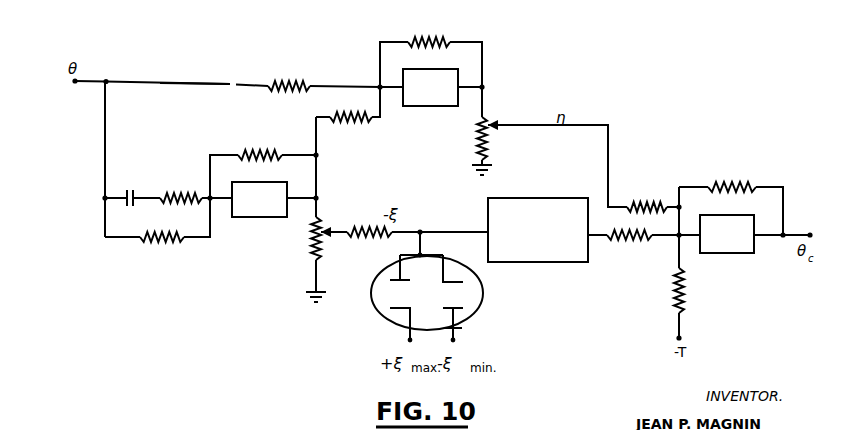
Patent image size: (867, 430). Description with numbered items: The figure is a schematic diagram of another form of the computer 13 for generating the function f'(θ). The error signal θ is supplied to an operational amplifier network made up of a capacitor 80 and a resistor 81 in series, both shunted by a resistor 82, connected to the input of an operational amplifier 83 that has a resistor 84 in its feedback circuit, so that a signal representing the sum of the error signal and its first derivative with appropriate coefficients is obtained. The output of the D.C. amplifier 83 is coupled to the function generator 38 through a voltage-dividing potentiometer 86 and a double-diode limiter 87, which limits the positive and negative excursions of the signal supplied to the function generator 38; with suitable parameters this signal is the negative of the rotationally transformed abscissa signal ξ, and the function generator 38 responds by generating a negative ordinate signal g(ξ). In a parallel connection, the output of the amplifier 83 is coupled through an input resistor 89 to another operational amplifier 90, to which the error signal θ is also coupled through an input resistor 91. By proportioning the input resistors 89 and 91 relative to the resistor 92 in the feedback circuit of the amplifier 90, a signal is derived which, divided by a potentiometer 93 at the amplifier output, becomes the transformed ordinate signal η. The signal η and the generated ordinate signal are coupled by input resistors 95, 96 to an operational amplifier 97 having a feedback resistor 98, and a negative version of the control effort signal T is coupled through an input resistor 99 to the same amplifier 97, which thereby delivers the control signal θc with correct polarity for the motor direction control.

The computer 13 is at (228, 79).
The function generator 38 is at (524, 198).
The capacitor 80 is at (129, 190).
The resistor 81 is at (175, 190).
The resistor 82 is at (162, 242).
The operational amplifier 83 is at (270, 219).
The resistor 84 is at (266, 149).
The voltage-dividing potentiometer 86 is at (321, 222).
The double-diode limiter 87 is at (429, 253).
The input resistor 89 is at (355, 121).
The operational amplifier 90 is at (415, 107).
The input resistor 91 is at (292, 79).
The resistor 92 is at (430, 37).
The potentiometer 93 is at (488, 121).
The input resistor 95 is at (631, 203).
The input resistor 96 is at (642, 241).
The operational amplifier 97 is at (722, 255).
The resistor 98 is at (729, 184).
The input resistor 99 is at (688, 292).